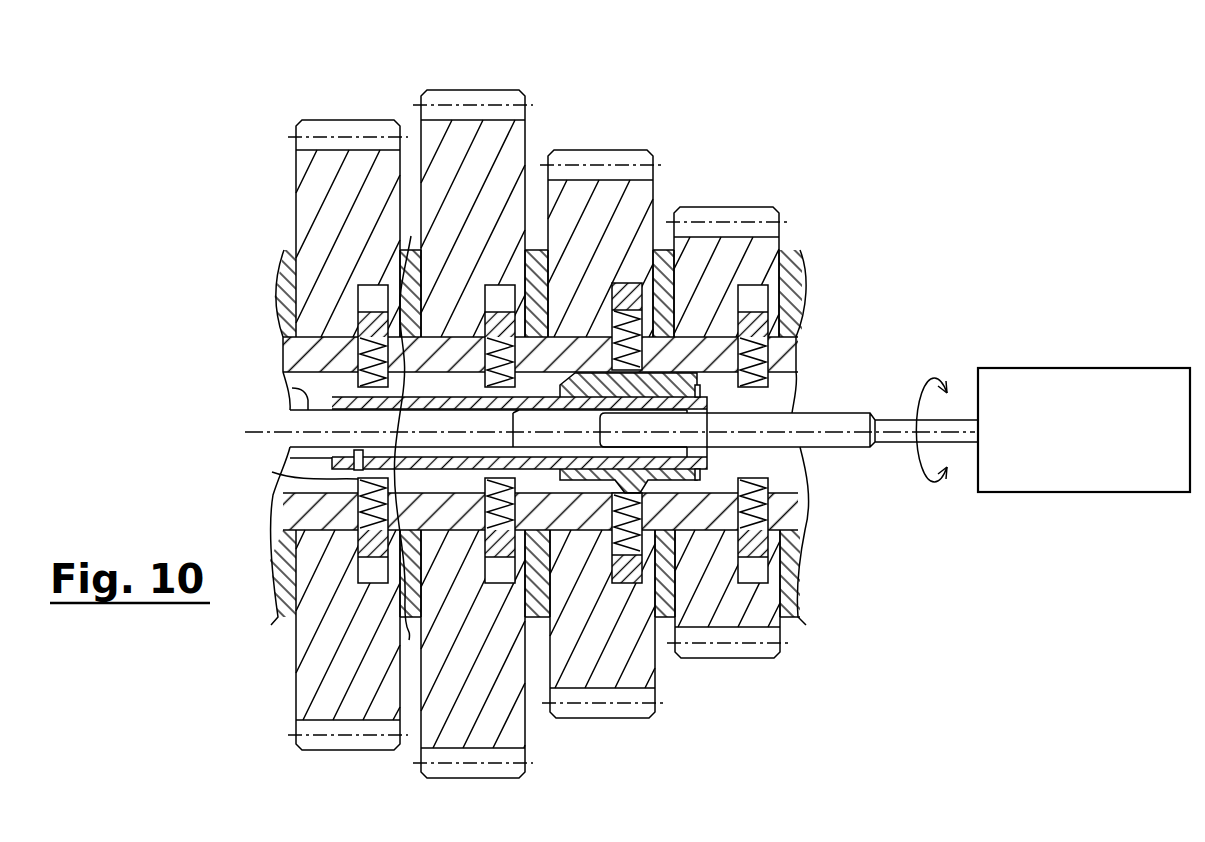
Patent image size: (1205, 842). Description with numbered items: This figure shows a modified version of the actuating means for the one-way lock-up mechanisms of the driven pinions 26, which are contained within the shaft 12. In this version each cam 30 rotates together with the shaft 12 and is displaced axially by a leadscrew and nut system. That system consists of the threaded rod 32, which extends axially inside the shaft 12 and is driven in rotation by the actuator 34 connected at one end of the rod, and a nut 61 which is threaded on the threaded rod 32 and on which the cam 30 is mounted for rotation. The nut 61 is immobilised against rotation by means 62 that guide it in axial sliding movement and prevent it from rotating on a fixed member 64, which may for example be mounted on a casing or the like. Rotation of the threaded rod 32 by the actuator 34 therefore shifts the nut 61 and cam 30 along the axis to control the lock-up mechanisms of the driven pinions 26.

The driven pinion 26 is at (331, 120).
The cam 30 is at (712, 340).
The shaft 12 is at (800, 358).
The fixed member 64 is at (292, 390).
The means for guiding in axial sliding movement and preventing rotation 62 is at (335, 474).
The nut 61 is at (710, 457).
The threaded rod 32 is at (841, 413).
The actuator 34 is at (1037, 368).